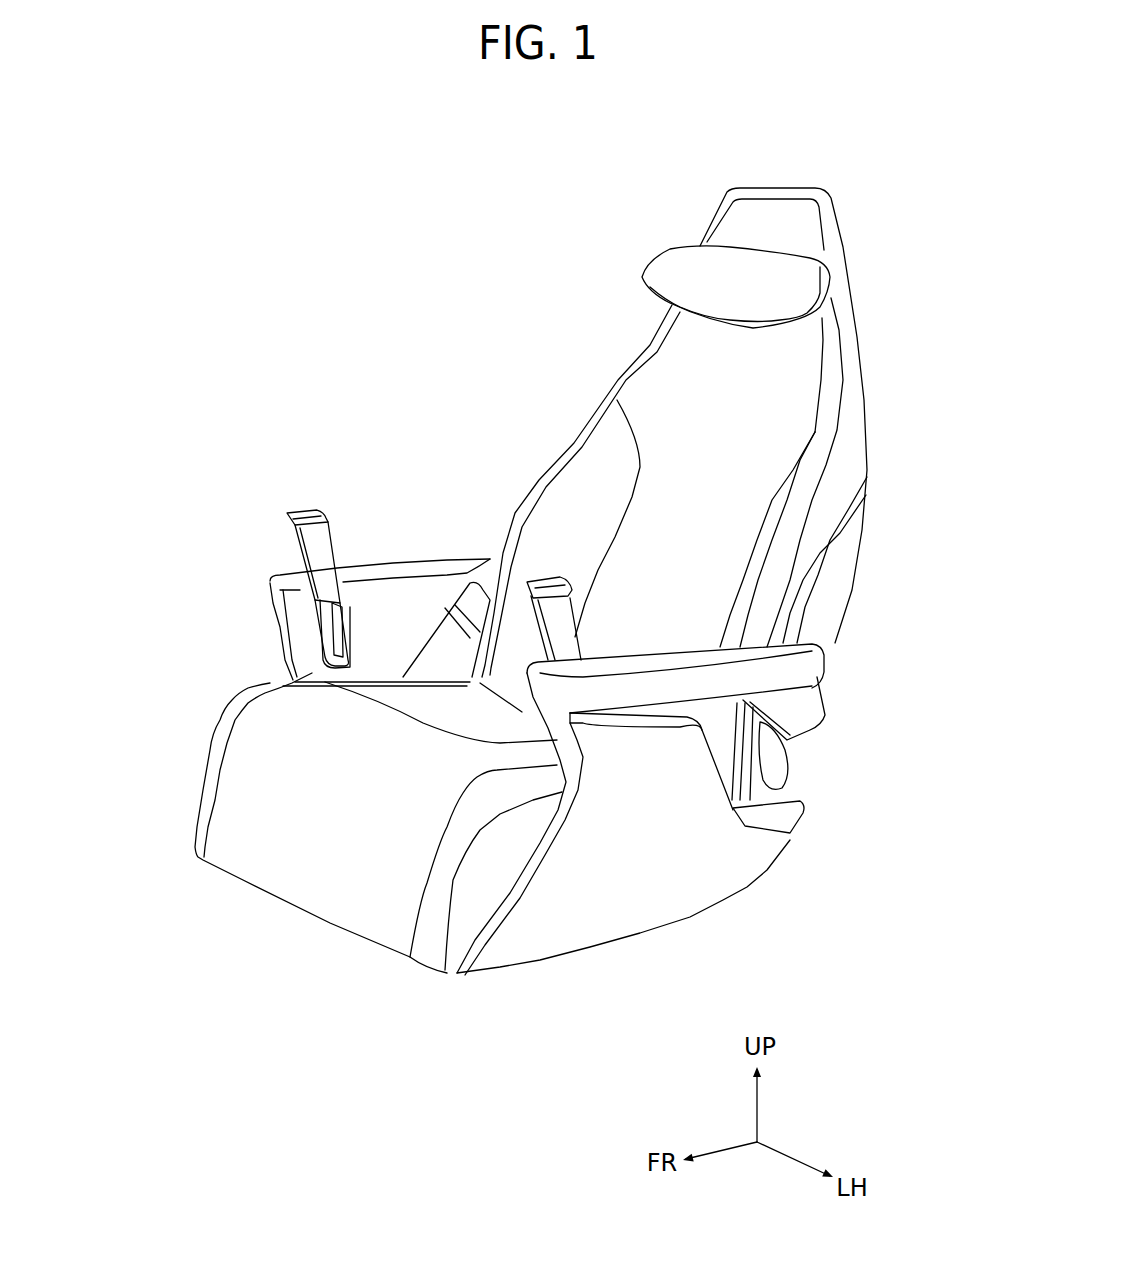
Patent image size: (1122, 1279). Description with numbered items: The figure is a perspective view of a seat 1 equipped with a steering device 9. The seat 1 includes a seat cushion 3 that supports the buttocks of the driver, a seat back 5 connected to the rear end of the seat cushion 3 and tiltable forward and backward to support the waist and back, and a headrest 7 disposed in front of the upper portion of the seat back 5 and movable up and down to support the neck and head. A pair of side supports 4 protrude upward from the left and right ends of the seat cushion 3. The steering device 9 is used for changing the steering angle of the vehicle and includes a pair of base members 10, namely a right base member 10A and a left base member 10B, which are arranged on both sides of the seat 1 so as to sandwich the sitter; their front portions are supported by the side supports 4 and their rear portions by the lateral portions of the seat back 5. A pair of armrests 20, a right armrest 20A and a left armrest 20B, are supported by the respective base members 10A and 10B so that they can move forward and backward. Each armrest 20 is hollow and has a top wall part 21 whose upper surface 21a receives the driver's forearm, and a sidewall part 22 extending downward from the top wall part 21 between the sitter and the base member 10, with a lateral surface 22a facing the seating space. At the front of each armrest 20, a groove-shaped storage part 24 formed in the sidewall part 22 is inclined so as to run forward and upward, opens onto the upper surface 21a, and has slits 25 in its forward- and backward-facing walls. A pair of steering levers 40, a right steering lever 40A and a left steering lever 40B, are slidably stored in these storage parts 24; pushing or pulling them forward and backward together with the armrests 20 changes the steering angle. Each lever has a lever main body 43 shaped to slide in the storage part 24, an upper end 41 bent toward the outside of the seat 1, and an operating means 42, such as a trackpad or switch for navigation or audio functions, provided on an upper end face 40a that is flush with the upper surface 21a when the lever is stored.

The seat 1 is at (791, 171).
The seat cushion 3 is at (303, 880).
The side supports 4 is at (273, 675).
The seat back 5 is at (660, 353).
The headrest 7 is at (673, 263).
The steering device 9 is at (671, 650).
The base members 10 is at (521, 736).
The right base member 10A is at (456, 643).
The left base member 10B is at (731, 725).
The armrests 20 is at (528, 745).
The right armrest 20A is at (271, 596).
The left armrest 20B is at (838, 657).
The top wall part 21 is at (413, 565).
The upper surface 21a is at (750, 650).
The sidewall part 22 is at (556, 742).
The lateral surface 22a is at (312, 673).
The storage part 24 is at (328, 650).
The slits 25 is at (338, 637).
The steering levers 40 is at (359, 709).
The right steering lever 40A is at (294, 538).
The left steering lever 40B is at (531, 643).
The upper end face 40a is at (328, 448).
The upper end 41 is at (285, 512).
The operating means 42 is at (313, 512).
The lever main body 43 is at (317, 562).